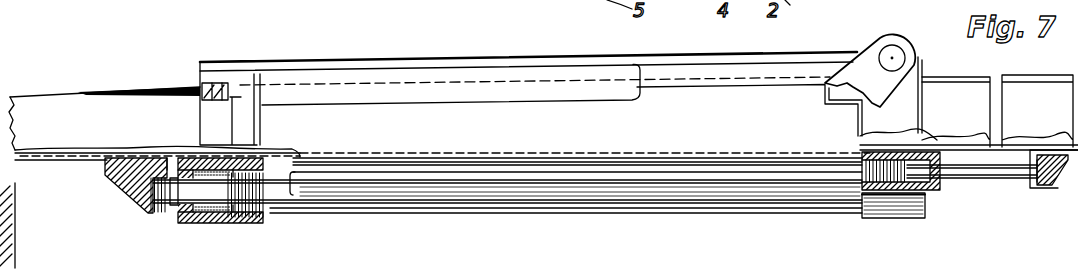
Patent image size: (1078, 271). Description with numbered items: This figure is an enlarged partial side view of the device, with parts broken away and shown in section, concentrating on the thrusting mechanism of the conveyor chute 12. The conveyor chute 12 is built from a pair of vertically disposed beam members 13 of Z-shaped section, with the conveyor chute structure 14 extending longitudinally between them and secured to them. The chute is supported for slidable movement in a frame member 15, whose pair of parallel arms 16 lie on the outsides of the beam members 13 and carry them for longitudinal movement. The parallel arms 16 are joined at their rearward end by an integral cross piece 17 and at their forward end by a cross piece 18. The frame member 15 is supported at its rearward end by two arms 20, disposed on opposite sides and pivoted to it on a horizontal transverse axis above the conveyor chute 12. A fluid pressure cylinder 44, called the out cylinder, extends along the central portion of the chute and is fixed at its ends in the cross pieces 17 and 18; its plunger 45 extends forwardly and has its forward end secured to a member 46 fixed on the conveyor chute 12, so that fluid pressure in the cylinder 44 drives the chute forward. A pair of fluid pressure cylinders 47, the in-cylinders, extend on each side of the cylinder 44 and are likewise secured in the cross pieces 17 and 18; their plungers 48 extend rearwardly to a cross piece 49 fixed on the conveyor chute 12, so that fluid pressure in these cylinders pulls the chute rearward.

The conveyor chute 12 is at (115, 88).
The beam members 13 is at (1030, 50).
The conveyor chute structure 14 is at (938, 147).
The frame member 15 is at (935, 64).
The parallel arms 16 is at (408, 60).
The cross piece 17 is at (900, 218).
The cross piece 18 is at (233, 225).
The arms 20 is at (857, 53).
The fluid pressure cylinder 44 is at (342, 217).
The plunger 45 is at (175, 215).
The member 46 is at (138, 200).
The fluid pressure cylinders 47 is at (533, 188).
The plungers 48 is at (983, 183).
The cross piece 49 is at (1047, 188).